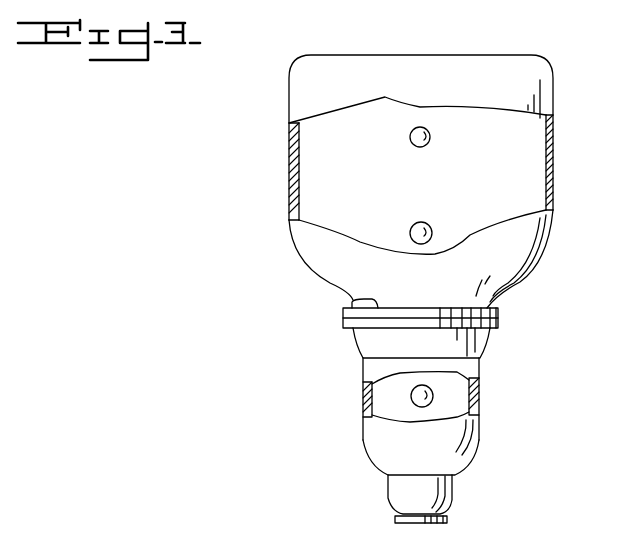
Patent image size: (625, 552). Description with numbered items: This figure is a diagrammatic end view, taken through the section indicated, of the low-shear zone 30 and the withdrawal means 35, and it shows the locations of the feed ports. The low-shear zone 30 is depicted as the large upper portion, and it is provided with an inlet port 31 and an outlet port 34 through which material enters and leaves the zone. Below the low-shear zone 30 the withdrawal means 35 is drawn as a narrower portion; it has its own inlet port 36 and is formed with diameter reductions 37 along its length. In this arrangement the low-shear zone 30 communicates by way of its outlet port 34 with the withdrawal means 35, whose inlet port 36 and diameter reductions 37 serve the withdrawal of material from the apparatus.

The low-shear zone 30 is at (290, 212).
The inlet port 31 is at (430, 140).
The outlet port 34 is at (345, 305).
The withdrawal means 35 is at (480, 400).
The inlet port 36 is at (418, 402).
The diameter reductions 37 is at (370, 462).